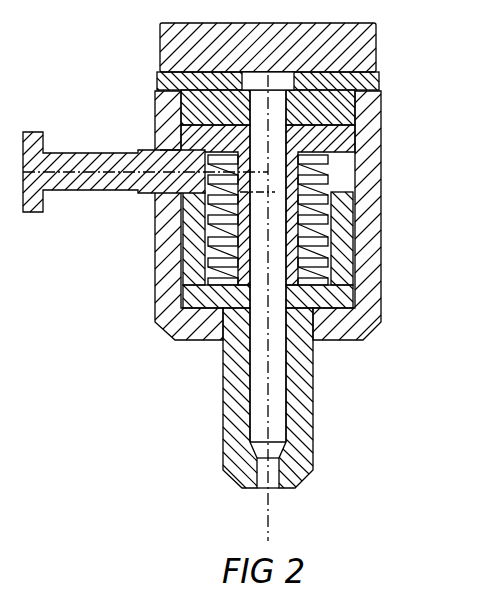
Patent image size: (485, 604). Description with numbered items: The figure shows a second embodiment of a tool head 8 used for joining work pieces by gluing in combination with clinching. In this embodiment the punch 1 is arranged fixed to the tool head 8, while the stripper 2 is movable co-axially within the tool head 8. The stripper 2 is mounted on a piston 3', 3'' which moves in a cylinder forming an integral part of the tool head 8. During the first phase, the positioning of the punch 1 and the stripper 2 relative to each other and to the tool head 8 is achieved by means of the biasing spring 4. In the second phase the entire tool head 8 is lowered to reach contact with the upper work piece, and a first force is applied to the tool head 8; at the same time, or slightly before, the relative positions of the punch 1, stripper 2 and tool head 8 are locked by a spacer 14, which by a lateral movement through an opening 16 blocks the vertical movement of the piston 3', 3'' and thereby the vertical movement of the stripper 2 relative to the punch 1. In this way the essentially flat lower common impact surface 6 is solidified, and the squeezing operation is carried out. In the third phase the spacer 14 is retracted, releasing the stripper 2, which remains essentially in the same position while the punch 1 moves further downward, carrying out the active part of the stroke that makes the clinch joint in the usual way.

The punch 1 is at (260, 432).
The stripper 2 is at (303, 415).
The piston 3' is at (299, 295).
The piston 3'' is at (307, 238).
The biasing spring 4 is at (322, 190).
The common impact surface 6 is at (275, 488).
The tool head 8 is at (373, 131).
The spacer 14 is at (106, 184).
The opening 16 is at (165, 150).